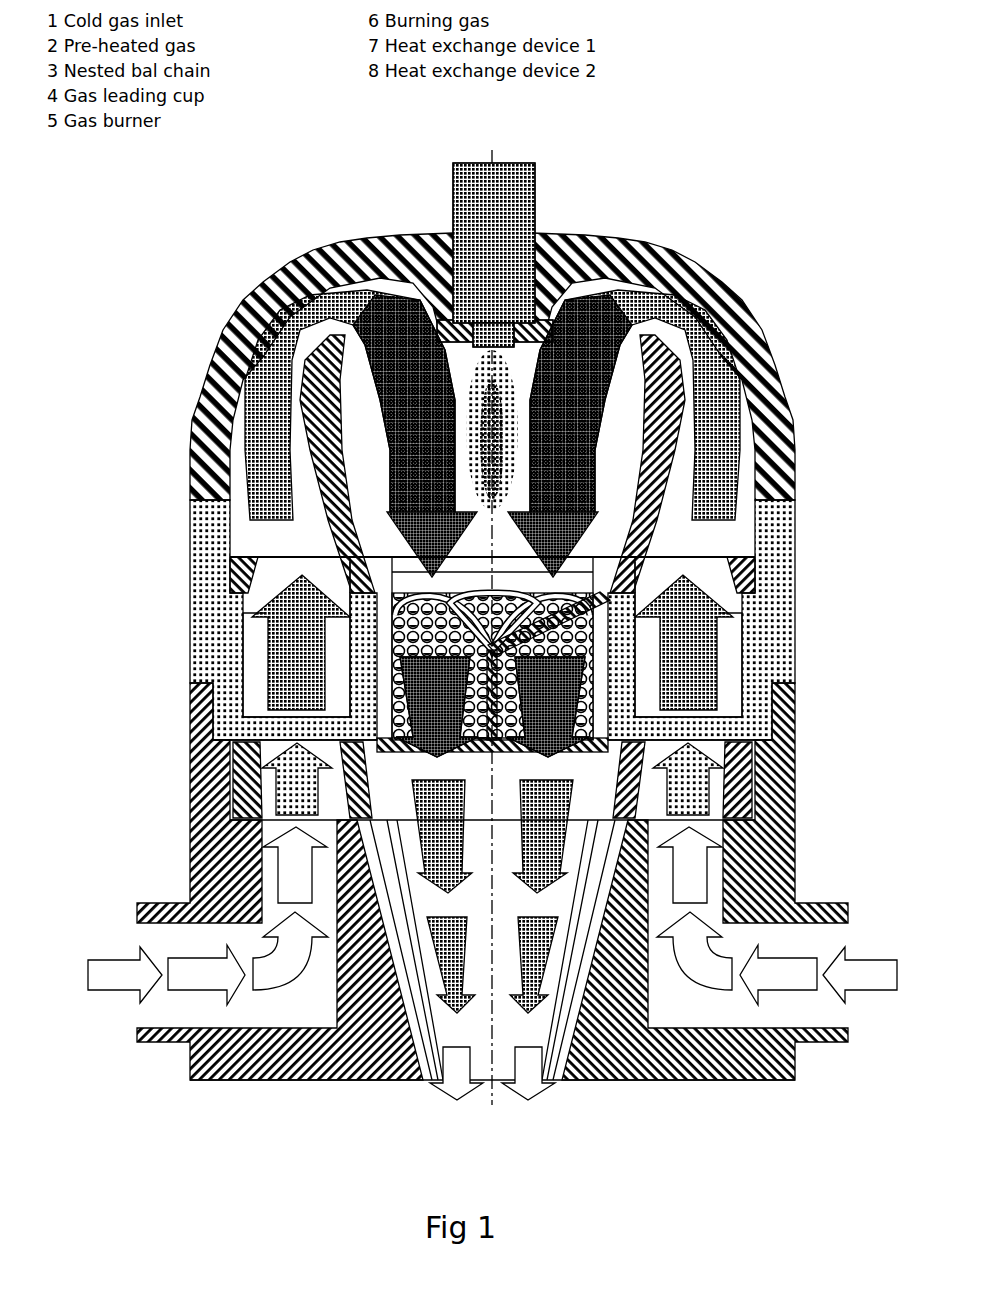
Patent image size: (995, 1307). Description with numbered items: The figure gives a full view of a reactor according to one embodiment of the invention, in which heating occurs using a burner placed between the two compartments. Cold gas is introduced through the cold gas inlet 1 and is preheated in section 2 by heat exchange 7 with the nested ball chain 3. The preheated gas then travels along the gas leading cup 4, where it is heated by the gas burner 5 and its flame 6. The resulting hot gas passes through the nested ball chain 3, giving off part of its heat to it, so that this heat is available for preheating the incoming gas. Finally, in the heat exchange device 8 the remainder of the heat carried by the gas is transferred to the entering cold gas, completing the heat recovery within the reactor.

The cold gas inlet 1 is at (190, 970).
The section 2 is at (287, 653).
The nested ball chain 3 is at (387, 625).
The gas leading cup 4 is at (327, 432).
The gas burner 5 is at (460, 275).
The flame 6 is at (498, 423).
The heat exchange 7 is at (623, 717).
The heat exchange device 8 is at (573, 957).